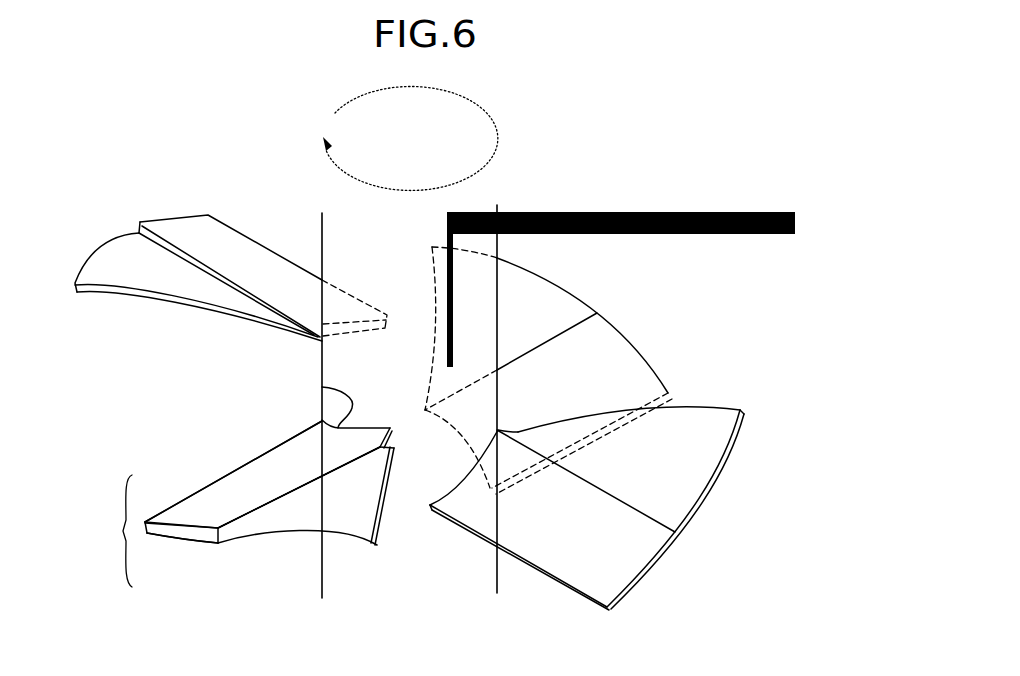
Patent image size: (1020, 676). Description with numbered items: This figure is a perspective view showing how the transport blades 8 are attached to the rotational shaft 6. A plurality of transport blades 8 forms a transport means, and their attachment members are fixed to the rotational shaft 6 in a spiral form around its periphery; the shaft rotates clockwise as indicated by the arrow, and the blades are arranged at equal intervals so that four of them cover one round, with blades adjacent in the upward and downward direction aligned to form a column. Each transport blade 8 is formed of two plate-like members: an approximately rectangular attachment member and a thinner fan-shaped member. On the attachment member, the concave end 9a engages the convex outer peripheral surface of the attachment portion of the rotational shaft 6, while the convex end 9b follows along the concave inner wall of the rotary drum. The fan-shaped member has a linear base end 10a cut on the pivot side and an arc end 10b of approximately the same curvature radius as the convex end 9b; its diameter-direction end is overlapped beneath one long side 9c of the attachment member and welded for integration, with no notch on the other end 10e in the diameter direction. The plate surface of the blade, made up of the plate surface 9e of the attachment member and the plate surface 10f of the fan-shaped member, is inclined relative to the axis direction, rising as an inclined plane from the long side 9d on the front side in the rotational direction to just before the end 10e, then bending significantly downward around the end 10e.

The rotational shaft 6 is at (556, 215).
The transport blade 8 is at (155, 208).
The concave end 9a is at (322, 388).
The convex end 9b is at (182, 540).
The long side 9c is at (290, 497).
The long side 9d is at (217, 477).
The plate surface 9e is at (188, 507).
The linear base end 10a is at (396, 446).
The arc end 10b is at (350, 545).
The end in the diameter direction 10e is at (385, 515).
The plate surface 10f is at (360, 478).